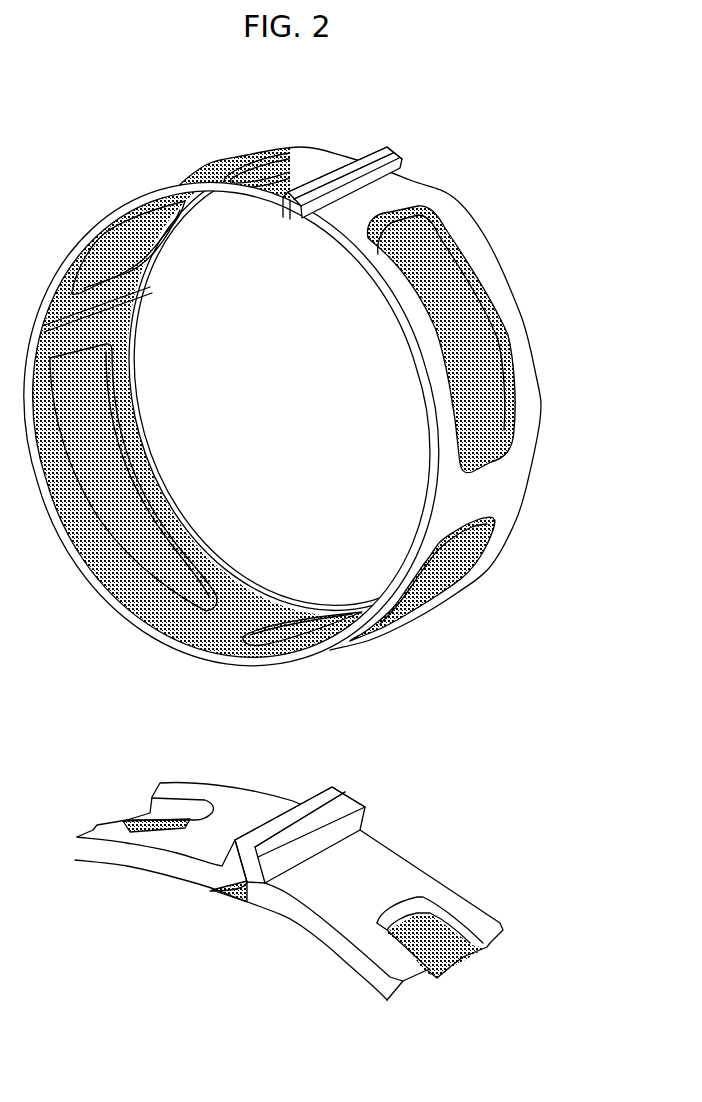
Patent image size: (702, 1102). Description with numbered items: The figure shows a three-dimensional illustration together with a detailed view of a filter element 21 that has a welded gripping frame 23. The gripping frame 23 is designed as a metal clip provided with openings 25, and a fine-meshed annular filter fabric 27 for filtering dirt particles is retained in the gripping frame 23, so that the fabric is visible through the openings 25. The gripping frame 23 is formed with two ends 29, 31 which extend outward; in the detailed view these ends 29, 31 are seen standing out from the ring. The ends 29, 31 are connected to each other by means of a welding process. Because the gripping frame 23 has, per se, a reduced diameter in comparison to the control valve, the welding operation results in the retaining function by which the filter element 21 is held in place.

The filter element 21 is at (351, 551).
The gripping frame 23 is at (480, 497).
The openings 25 is at (480, 373).
The annular filter fabric 27 is at (447, 300).
The end 29 is at (347, 172).
The end 31 is at (400, 152).